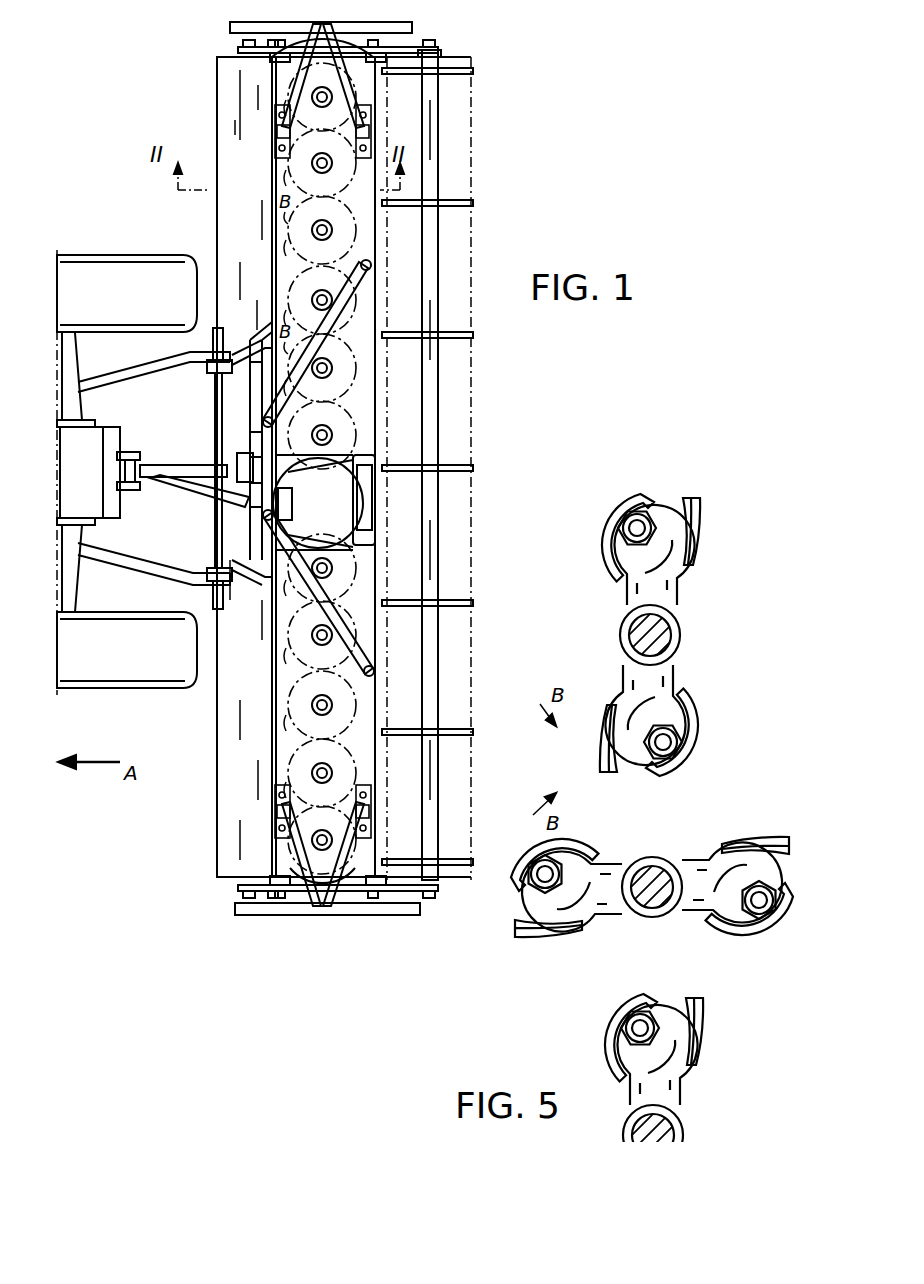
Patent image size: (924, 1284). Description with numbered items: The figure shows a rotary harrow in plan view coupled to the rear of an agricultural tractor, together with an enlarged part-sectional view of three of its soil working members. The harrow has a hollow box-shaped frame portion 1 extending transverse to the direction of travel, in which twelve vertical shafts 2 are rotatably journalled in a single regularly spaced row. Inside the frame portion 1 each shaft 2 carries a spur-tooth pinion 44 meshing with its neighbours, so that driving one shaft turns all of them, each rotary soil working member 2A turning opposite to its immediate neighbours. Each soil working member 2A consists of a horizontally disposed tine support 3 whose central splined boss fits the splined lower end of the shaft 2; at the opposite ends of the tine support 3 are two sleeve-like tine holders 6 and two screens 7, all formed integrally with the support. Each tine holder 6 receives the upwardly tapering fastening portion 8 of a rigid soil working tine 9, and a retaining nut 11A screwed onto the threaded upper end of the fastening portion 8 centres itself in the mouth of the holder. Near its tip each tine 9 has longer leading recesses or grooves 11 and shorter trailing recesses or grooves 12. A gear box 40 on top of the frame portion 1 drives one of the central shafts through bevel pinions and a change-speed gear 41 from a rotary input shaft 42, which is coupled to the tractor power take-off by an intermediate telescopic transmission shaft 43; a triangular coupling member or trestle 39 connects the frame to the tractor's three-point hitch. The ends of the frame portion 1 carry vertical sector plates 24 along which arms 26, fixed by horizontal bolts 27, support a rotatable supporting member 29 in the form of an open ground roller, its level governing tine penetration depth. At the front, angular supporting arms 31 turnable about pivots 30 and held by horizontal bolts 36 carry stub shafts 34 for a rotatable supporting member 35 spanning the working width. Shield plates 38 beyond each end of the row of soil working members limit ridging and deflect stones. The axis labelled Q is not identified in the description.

In FIG. 1, the hollow box-shaped frame portion 1 is at (372, 385).
In FIG. 1, the shaft 2 is at (330, 170).
In FIG. 5, the shaft 2 is at (628, 640).
In FIG. 5, the rotary soil working member 2A is at (622, 666).
In FIG. 5, the tine support 3 is at (673, 607).
In FIG. 5, the tine holder 6 is at (686, 562).
In FIG. 5, the screen 7 is at (604, 521).
In FIG. 5, the fastening portion 8 is at (645, 515).
In FIG. 5, the soil working tine 9 is at (709, 521).
In FIG. 5, the leading recess or groove 11 is at (520, 937).
In FIG. 5, the retaining nut 11A is at (620, 552).
In FIG. 5, the trailing recess or groove 12 is at (520, 937).
In FIG. 1, the sector plate 24 is at (290, 62).
In FIG. 1, the arm 26 is at (438, 50).
In FIG. 1, the horizontal bolt 27 is at (385, 22).
In FIG. 1, the rotatable supporting member 29 is at (472, 437).
In FIG. 1, the pivot 30 is at (325, 24).
In FIG. 1, the angular supporting arm 31 is at (238, 50).
In FIG. 1, the stub shaft 34 is at (248, 40).
In FIG. 1, the supporting member 35 is at (217, 216).
In FIG. 1, the horizontal bolt 36 is at (286, 40).
In FIG. 1, the shield plate 38 is at (262, 22).
In FIG. 1, the coupling member or trestle 39 is at (250, 396).
In FIG. 1, the gear box 40 is at (372, 497).
In FIG. 1, the change-speed gear 41 is at (372, 532).
In FIG. 1, the rotary input shaft 42 is at (282, 500).
In FIG. 1, the intermediate telescopic transmission shaft 43 is at (200, 495).
In FIG. 1, the pinion 44 is at (335, 771).
In FIG. 5, the axis Q is at (672, 635).